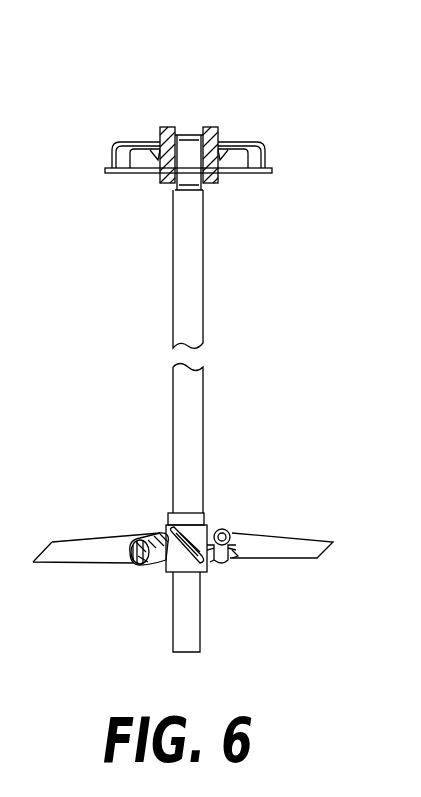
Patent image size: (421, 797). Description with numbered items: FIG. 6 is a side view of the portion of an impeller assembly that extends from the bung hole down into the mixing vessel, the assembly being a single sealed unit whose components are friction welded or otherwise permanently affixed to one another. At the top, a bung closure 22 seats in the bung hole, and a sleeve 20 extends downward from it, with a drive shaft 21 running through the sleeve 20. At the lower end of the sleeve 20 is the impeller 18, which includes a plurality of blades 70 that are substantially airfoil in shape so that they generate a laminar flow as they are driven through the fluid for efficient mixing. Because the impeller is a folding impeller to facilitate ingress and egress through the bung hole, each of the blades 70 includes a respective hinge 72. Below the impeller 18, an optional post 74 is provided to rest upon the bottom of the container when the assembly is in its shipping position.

The impeller 18 is at (248, 472).
The sleeve 20 is at (203, 316).
The drive shaft 21 is at (183, 157).
The bung closure 22 is at (222, 129).
The blades 70 is at (90, 563).
The hinge 72 is at (167, 533).
The post 74 is at (202, 625).